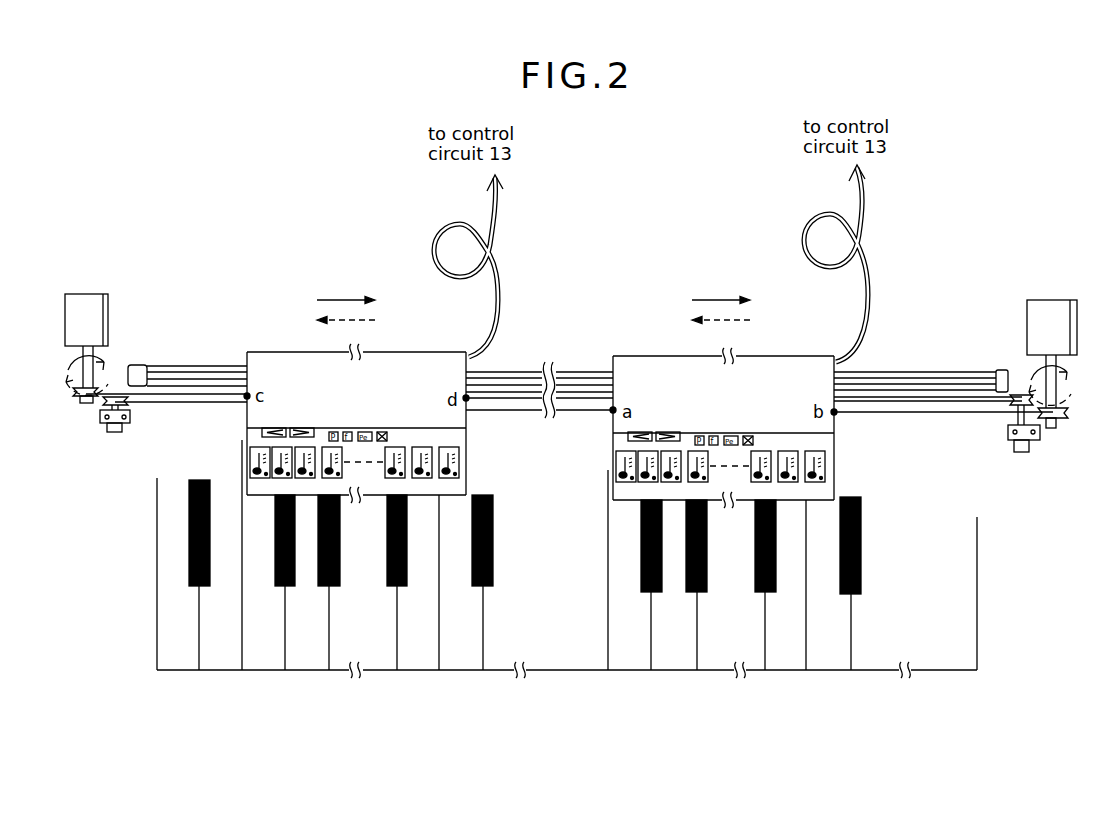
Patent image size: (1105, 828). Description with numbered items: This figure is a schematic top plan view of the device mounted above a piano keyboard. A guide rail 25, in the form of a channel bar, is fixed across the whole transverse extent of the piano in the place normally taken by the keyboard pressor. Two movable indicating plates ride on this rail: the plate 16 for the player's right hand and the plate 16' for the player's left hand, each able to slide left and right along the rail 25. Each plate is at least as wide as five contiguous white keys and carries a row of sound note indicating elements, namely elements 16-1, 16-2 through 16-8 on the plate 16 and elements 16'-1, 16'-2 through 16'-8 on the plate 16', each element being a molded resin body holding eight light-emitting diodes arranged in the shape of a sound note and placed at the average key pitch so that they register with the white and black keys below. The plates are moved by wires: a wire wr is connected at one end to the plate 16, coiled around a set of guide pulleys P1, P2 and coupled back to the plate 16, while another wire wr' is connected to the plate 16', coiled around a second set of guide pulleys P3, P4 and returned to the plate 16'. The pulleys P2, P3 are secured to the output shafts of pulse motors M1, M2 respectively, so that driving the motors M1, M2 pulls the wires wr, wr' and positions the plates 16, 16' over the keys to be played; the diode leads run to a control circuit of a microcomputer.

The movable indicating plate 16 is at (727, 436).
The movable indicating plate 16' is at (354, 415).
The sound note indicating element 16-1 is at (634, 482).
The sound note indicating element 16-2 is at (654, 456).
The sound note indicating element 16-8 is at (832, 480).
The sound note indicating element 16'-1 is at (481, 467).
The sound note indicating element 16'-2 is at (441, 403).
The sound note indicating element 16'-8 is at (227, 455).
The guide rail 25 is at (927, 372).
The pulse motor M1 is at (1052, 354).
The pulse motor M2 is at (86, 344).
The guide pulley P1 is at (110, 408).
The guide pulley P2 is at (1067, 420).
The guide pulley P3 is at (79, 396).
The guide pulley P4 is at (1020, 393).
The wire wr is at (181, 426).
The wire wr' is at (166, 361).